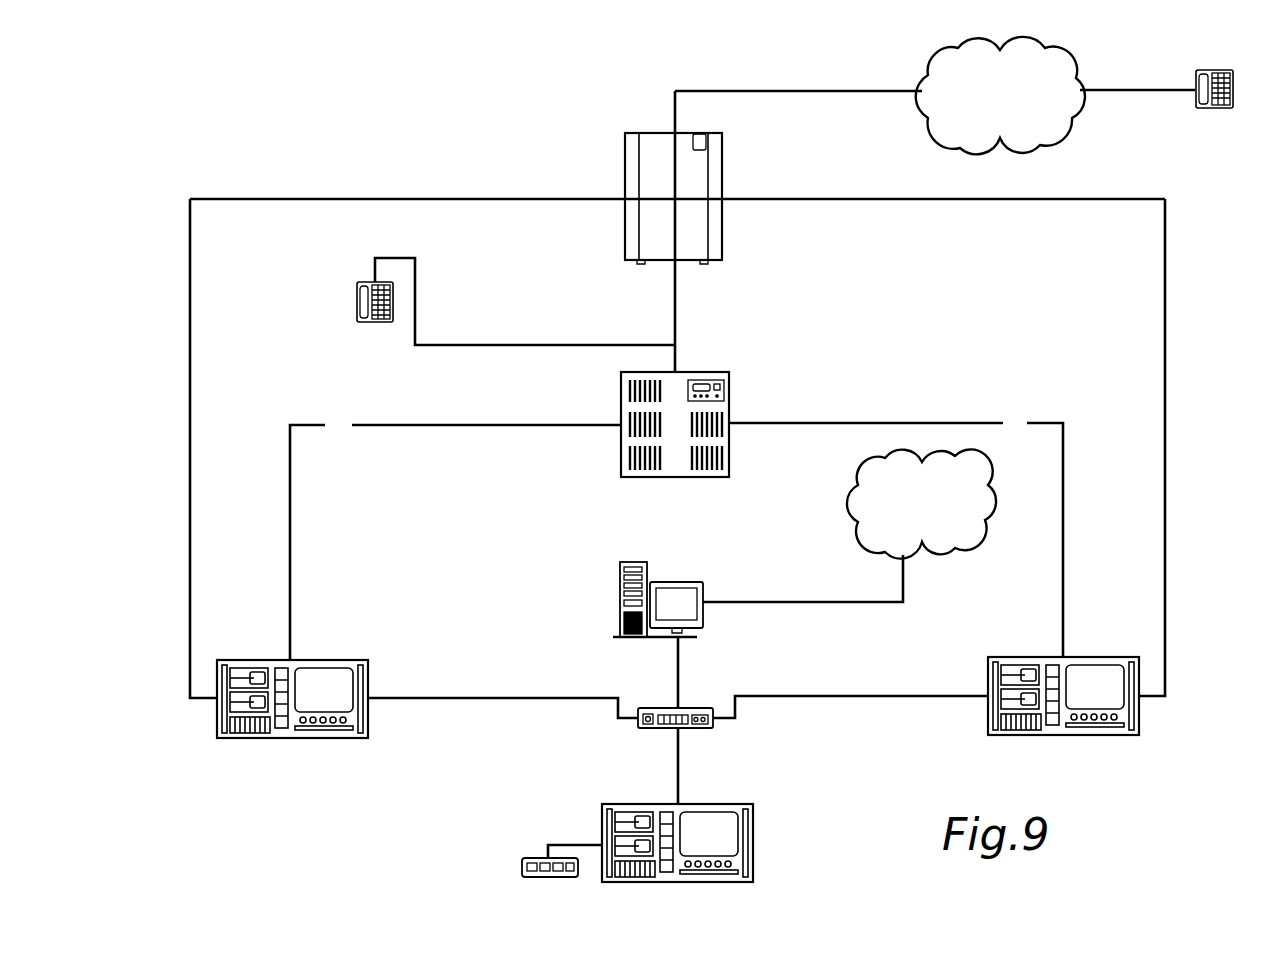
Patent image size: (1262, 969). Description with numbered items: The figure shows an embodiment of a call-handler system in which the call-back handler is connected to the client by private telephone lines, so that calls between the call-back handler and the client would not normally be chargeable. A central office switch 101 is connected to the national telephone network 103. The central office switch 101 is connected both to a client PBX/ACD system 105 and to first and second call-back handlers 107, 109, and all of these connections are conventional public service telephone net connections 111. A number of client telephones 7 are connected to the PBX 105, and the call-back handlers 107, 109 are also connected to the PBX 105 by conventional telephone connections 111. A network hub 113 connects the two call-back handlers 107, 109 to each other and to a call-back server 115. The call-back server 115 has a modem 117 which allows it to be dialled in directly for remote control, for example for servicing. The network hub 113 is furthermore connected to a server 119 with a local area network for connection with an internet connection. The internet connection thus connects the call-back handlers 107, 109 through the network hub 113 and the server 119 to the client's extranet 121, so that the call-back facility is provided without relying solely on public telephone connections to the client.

The client telephone 7 is at (357, 303).
The central office switch 101 is at (625, 172).
The national telephone network 103 is at (1076, 108).
The client PBX/ACD system 105 is at (728, 393).
The first call-back handler 107 is at (370, 718).
The second call-back handler 109 is at (1141, 716).
The public service telephone net connection 111 is at (376, 199).
The network hub 113 is at (702, 729).
The call-back server 115 is at (754, 846).
The modem 117 is at (526, 858).
The server 119 is at (620, 592).
The client's extranet 121 is at (965, 545).